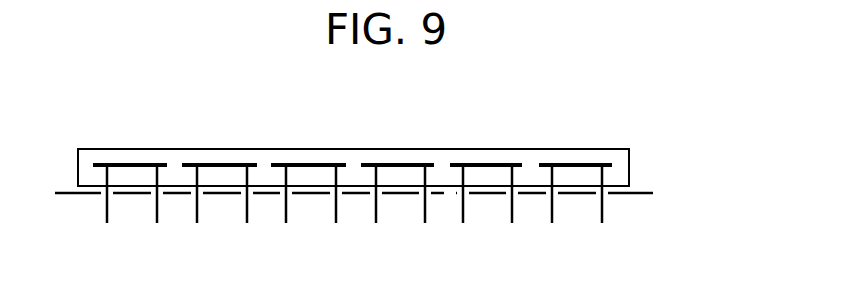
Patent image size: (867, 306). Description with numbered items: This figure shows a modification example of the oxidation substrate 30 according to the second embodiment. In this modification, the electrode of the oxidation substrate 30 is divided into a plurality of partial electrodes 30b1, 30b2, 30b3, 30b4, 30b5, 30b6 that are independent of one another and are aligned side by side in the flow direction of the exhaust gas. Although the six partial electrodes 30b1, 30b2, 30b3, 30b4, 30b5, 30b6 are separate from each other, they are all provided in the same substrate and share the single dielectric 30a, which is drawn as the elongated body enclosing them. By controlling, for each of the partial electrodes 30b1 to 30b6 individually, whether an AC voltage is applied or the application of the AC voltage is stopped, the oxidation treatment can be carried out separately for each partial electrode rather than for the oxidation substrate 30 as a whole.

The oxidation substrate 30 is at (590, 95).
The dielectric 30a is at (95, 149).
The partial electrode 30b1 is at (136, 164).
The partial electrode 30b2 is at (223, 165).
The partial electrode 30b3 is at (318, 165).
The partial electrode 30b4 is at (408, 165).
The partial electrode 30b5 is at (488, 165).
The partial electrode 30b6 is at (582, 165).